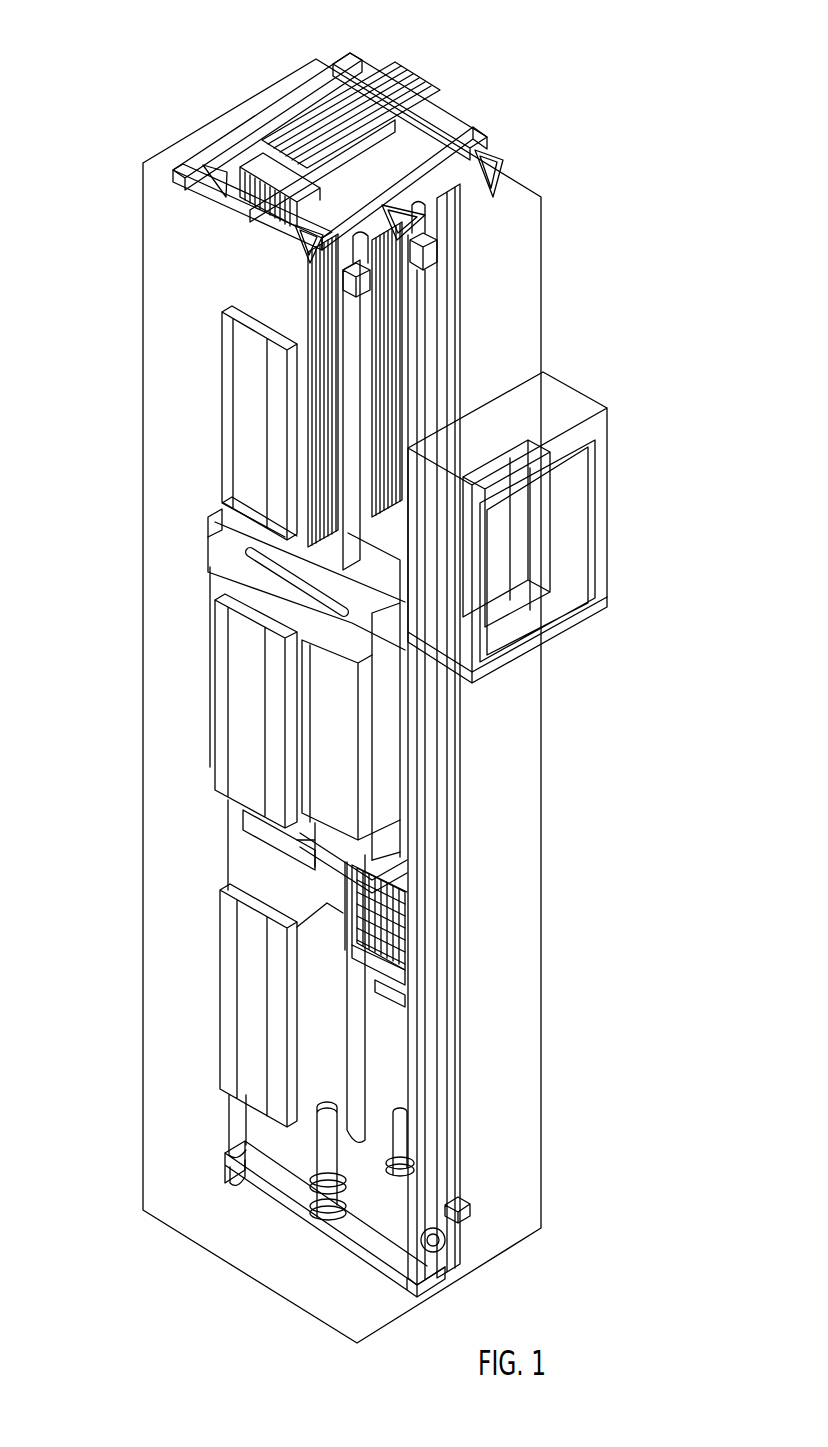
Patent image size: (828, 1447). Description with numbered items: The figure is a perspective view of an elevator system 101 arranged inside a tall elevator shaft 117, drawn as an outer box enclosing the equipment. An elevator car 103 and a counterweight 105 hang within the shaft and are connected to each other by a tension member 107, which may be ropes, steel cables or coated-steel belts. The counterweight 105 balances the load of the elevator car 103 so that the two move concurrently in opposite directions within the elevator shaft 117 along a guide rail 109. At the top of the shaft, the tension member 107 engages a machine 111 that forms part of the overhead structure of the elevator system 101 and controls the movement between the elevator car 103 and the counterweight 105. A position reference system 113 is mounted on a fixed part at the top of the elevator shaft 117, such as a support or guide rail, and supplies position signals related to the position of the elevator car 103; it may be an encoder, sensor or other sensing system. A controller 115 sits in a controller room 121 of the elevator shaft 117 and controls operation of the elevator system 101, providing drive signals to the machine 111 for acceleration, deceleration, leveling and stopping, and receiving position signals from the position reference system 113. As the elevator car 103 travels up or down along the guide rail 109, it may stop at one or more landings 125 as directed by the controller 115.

The elevator system 101 is at (568, 84).
The elevator car 103 is at (340, 742).
The counterweight 105 is at (395, 937).
The tension member 107 is at (344, 415).
The guide rail 109 is at (430, 858).
The machine 111 is at (250, 163).
The position reference system 113 is at (430, 253).
The controller 115 is at (548, 542).
The elevator shaft 117 is at (200, 864).
The controller room 121 is at (612, 405).
The landings 125 is at (218, 410).